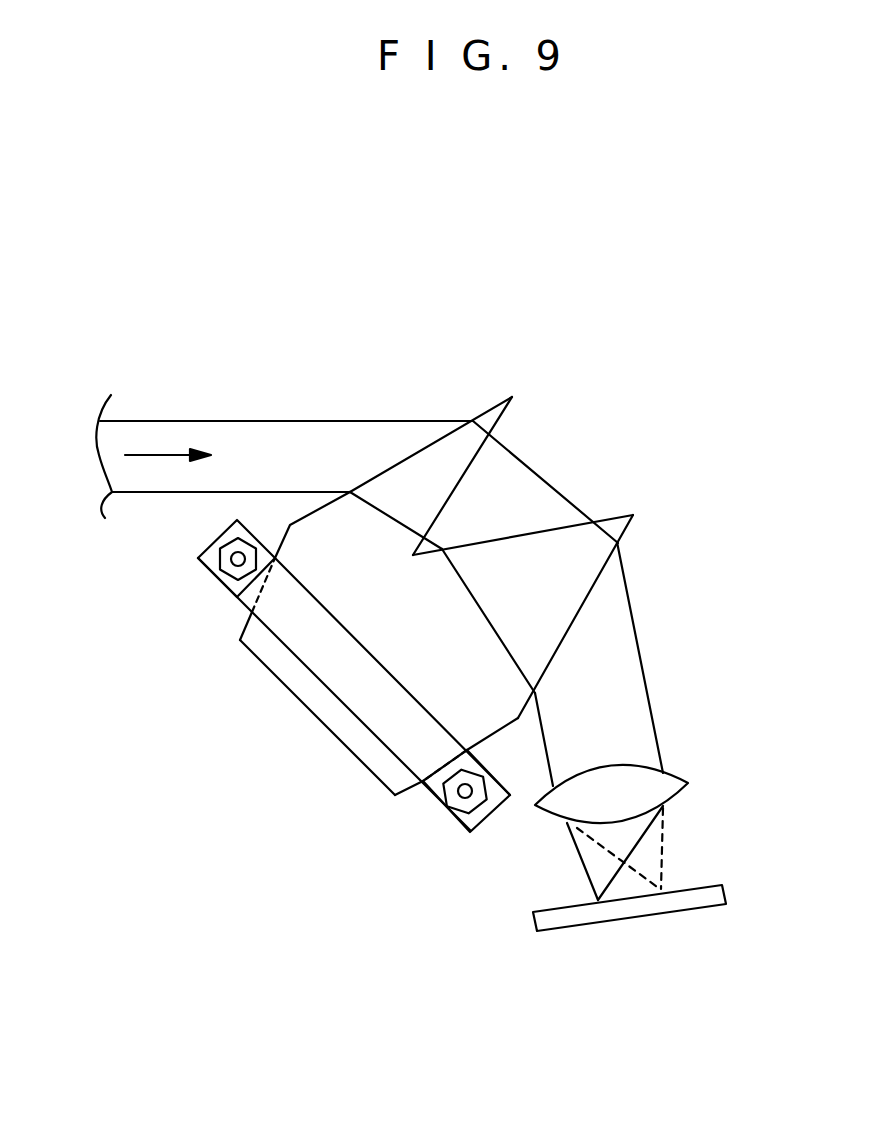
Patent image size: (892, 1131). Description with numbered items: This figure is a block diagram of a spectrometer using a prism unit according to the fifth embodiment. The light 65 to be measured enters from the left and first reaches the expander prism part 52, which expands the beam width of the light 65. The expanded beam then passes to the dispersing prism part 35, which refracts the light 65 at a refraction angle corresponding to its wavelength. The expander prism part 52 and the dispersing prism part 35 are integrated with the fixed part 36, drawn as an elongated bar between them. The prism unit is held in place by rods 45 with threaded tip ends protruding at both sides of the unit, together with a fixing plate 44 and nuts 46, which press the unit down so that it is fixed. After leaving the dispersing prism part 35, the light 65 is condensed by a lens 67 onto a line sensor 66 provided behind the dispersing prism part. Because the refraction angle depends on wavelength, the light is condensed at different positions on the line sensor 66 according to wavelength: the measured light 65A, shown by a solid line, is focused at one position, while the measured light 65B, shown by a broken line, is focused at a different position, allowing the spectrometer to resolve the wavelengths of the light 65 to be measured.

The light to be measured 65 is at (154, 422).
The expander prism part 52 is at (495, 397).
The dispersing prism part 35 is at (640, 526).
The fixed part 36 is at (300, 700).
The nuts 46 is at (205, 553).
The rods 45 is at (232, 564).
The fixing plate 44 is at (222, 592).
The lens 67 is at (678, 773).
The measured light 65A is at (582, 863).
The measured light 65B is at (665, 838).
The line sensor 66 is at (631, 382).